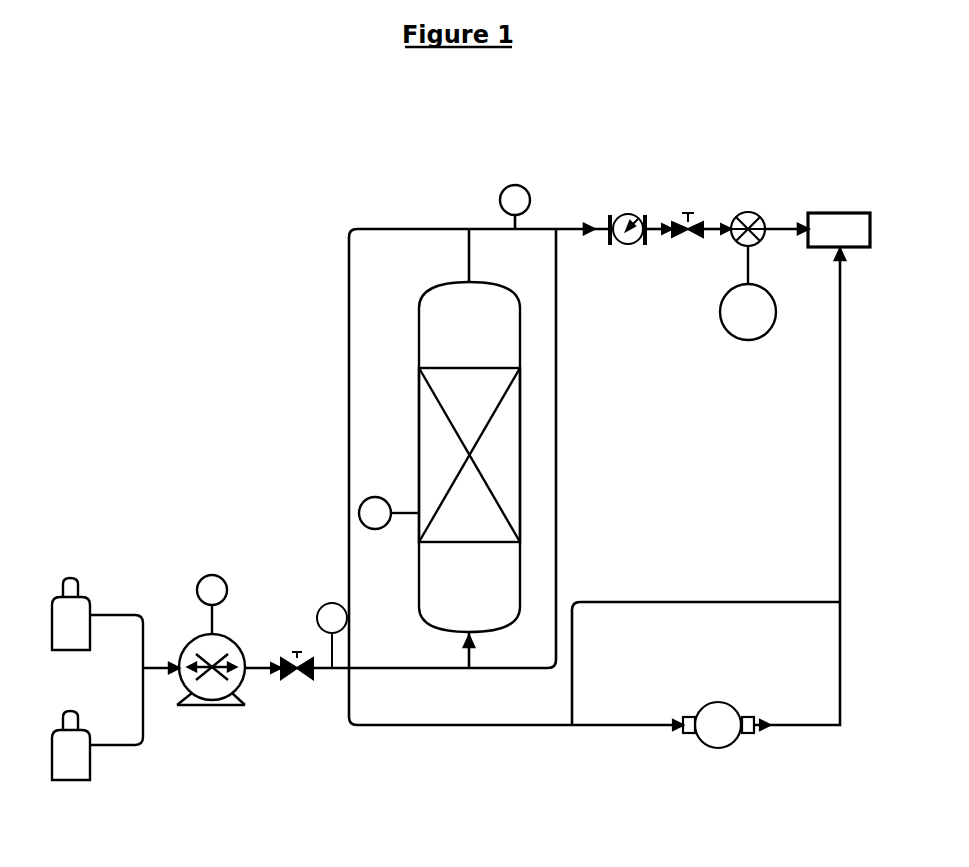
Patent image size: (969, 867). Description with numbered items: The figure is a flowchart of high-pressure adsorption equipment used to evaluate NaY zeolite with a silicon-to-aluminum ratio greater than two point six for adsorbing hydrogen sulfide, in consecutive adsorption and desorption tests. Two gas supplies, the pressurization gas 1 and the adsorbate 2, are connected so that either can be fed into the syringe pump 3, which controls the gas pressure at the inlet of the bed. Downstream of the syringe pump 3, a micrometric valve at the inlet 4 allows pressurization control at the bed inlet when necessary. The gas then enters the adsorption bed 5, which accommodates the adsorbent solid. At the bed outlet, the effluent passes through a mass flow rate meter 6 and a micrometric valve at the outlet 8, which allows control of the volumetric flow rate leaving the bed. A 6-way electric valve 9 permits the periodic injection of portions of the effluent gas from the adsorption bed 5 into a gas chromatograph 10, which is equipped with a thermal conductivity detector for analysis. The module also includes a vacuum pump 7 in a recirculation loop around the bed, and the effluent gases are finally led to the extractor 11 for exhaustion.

The pressurization gas 1 is at (97, 627).
The adsorbate 2 is at (97, 738).
The syringe pump 3 is at (211, 655).
The micrometric valve at the inlet 4 is at (310, 654).
The adsorption bed 5 is at (416, 414).
The mass flow rate meter 6 is at (641, 242).
The vacuum pump 7 is at (721, 741).
The micrometric valve at the outlet 8 is at (701, 242).
The 6-way electric valve 9 is at (751, 240).
The gas chromatograph 10 is at (748, 293).
The extractor 11 is at (839, 230).